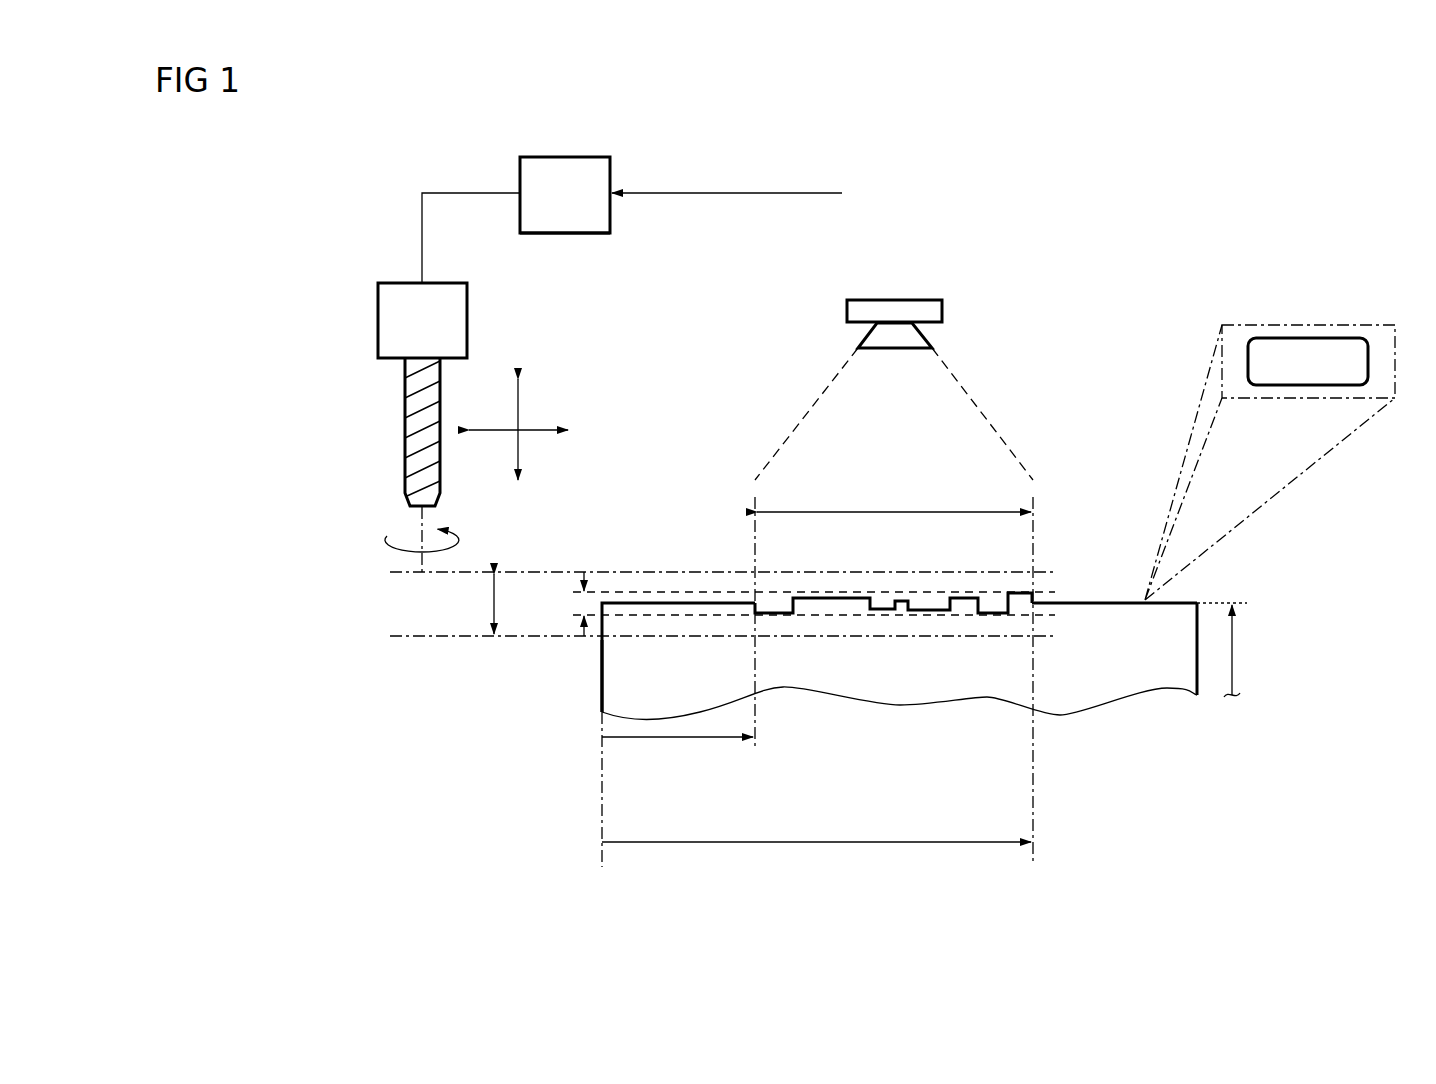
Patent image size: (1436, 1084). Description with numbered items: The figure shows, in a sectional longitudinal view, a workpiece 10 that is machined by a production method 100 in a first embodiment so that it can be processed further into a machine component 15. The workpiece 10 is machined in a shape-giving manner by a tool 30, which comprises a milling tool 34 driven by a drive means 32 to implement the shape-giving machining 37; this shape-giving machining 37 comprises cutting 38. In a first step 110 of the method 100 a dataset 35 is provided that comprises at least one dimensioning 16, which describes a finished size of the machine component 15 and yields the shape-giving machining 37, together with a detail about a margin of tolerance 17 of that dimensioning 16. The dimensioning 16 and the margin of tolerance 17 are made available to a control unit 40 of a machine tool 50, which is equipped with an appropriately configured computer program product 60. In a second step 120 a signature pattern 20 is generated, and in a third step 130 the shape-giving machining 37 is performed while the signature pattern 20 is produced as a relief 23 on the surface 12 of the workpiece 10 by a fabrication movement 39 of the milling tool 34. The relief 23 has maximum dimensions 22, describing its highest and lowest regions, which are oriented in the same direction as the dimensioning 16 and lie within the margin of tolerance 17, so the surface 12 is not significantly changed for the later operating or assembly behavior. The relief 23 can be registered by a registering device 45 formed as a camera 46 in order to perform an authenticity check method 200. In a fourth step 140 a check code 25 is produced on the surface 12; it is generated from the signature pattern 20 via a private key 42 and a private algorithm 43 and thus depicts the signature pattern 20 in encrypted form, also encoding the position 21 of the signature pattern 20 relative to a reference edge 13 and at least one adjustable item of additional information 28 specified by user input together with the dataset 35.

The workpiece 10 is at (899, 691).
The surface 12 is at (1245, 362).
The reference edge 13 is at (602, 672).
The machine component 15 is at (898, 692).
The dimensioning 16 is at (1232, 657).
The margin of tolerance 17 is at (490, 605).
The signature pattern 20 is at (900, 512).
The position 21 is at (680, 739).
The maximum dimensions 22 is at (580, 605).
The relief 23 is at (901, 598).
The check code 25 is at (1279, 425).
The additional information 28 is at (1305, 338).
The tool 30 is at (362, 320).
The drive means 32 is at (378, 318).
The milling tool 34 is at (405, 433).
The dataset 35 is at (727, 150).
The shape-giving machining 37 is at (511, 539).
The cutting 38 is at (446, 531).
The fabrication movement 39 is at (558, 427).
The control unit 40 is at (562, 152).
The private key 42 is at (560, 261).
The private algorithm 43 is at (563, 217).
The registering device 45 is at (894, 285).
The camera 46 is at (893, 310).
The machine tool 50 is at (416, 170).
The computer program product 60 is at (560, 261).
The production method 100 is at (388, 144).
The first step 110 is at (722, 193).
The second step 120 is at (561, 157).
The third step 130 is at (519, 412).
The fourth step 140 is at (1279, 425).
The authenticity check method 200 is at (957, 385).